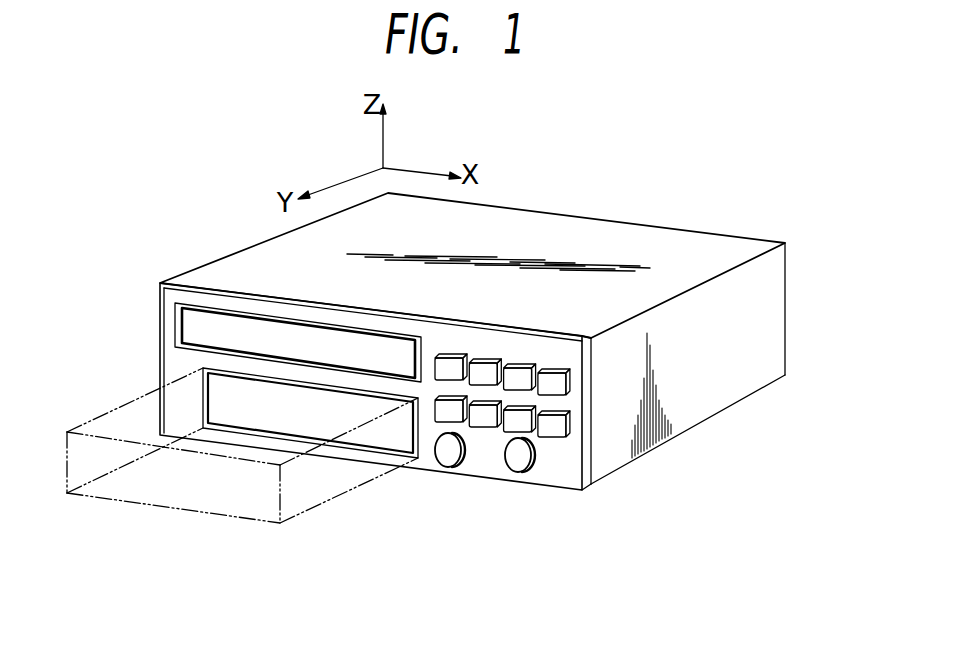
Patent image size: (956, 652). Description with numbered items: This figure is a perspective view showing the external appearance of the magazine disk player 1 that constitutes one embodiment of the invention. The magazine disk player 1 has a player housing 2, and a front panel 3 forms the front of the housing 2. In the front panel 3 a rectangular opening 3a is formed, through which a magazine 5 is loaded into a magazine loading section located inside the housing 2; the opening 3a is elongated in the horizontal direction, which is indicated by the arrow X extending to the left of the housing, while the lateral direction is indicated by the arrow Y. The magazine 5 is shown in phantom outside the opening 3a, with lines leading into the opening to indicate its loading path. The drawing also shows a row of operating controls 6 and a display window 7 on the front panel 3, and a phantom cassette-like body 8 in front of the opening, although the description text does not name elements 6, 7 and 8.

The magazine disk player 1 is at (240, 178).
The player housing 2 is at (646, 218).
The front panel 3 is at (180, 297).
The rectangular opening 3a is at (395, 435).
The magazine 5 is at (90, 412).
The operating keys and knobs 6 is at (428, 467).
The display window 7 is at (233, 323).
The tape cassette 8 is at (170, 492).